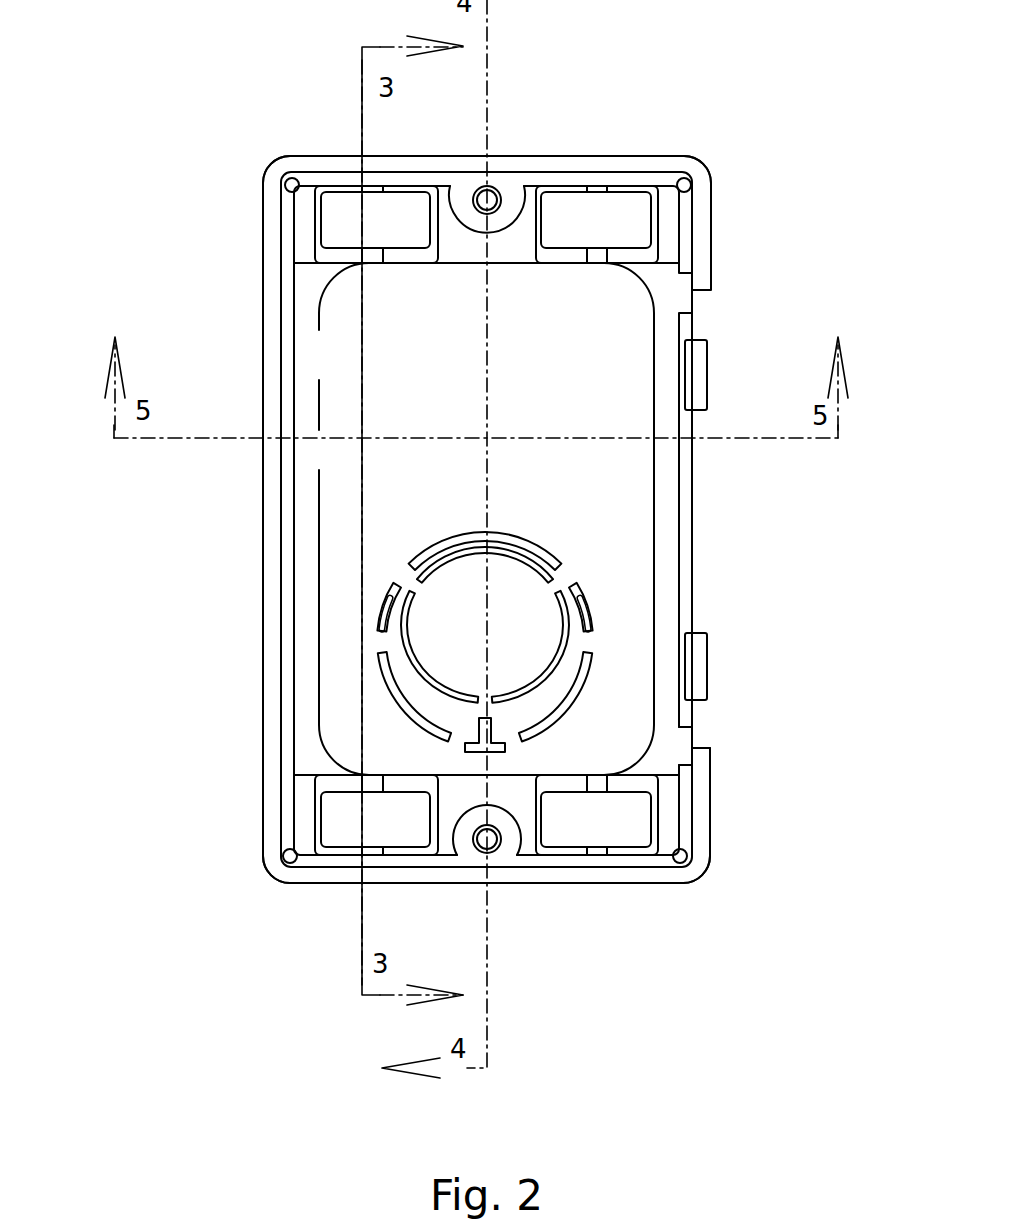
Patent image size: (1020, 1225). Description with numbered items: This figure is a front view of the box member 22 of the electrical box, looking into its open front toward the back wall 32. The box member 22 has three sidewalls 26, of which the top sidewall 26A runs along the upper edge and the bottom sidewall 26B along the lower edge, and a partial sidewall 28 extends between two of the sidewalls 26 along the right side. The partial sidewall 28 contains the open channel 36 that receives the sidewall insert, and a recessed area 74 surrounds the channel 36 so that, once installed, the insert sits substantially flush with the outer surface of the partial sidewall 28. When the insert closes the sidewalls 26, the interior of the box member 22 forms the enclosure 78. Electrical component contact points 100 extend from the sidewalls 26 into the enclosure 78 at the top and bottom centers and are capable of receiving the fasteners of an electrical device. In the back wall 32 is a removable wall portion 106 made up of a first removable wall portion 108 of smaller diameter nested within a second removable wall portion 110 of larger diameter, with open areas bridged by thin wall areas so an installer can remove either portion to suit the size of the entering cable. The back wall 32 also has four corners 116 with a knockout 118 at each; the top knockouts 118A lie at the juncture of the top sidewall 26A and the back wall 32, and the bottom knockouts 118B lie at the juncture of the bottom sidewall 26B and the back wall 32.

The box member 22 is at (193, 298).
The sidewalls 26 is at (273, 532).
The top sidewall 26A is at (305, 160).
The bottom sidewall 26B is at (322, 874).
The partial sidewall 28 is at (700, 778).
The back wall 32 is at (583, 378).
The open channel 36 is at (685, 557).
The recessed area 74 is at (691, 737).
The enclosure 78 is at (613, 515).
The electrical component contact points 100 is at (490, 196).
The removable wall portion 106 is at (380, 610).
The first removable wall portion 108 is at (484, 629).
The second removable wall portion 110 is at (533, 708).
The corners 116 is at (705, 160).
The knockout 118 is at (656, 220).
The top knockouts 118A is at (428, 236).
The bottom knockouts 118B is at (426, 836).